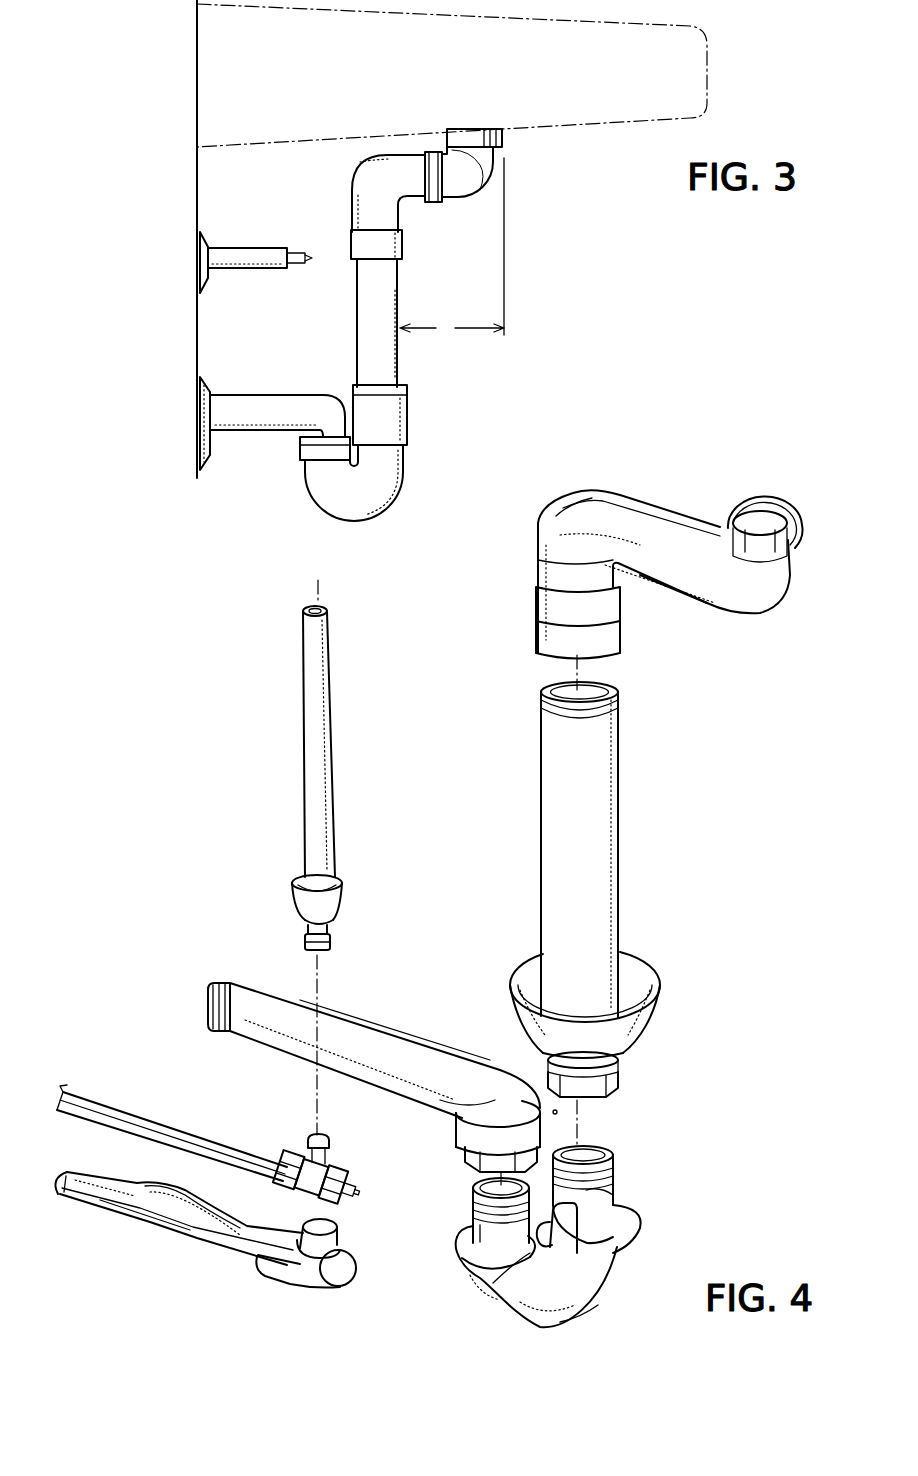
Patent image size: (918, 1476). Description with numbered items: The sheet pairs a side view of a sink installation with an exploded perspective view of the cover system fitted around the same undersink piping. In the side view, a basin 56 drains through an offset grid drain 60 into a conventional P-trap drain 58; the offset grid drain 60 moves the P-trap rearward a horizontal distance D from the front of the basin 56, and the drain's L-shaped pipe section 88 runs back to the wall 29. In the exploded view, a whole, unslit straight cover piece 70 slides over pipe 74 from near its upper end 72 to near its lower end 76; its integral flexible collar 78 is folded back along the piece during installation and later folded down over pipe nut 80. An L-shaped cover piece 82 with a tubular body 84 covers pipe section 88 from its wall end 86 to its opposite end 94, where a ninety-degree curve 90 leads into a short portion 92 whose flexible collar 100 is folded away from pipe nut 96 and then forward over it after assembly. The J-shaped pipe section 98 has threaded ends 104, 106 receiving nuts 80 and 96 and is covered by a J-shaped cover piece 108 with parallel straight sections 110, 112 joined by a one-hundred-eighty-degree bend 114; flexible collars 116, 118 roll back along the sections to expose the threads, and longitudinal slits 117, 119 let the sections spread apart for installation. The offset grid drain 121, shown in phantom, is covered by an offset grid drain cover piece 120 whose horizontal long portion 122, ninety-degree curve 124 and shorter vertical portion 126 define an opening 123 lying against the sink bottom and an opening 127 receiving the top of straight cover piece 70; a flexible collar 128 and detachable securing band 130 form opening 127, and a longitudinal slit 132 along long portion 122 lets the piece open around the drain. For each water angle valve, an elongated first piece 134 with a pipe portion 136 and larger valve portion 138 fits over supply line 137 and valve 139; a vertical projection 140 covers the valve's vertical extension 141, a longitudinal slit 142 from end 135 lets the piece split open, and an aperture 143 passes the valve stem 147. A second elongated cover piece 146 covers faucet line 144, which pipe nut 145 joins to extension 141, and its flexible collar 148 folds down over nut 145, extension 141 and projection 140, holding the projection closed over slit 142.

In FIG. 3, the wall 29 is at (207, 184).
In FIG. 3, the basin 56 is at (433, 90).
In FIG. 3, the P-trap drain 58 is at (437, 274).
In FIG. 3, the offset grid drain 60 is at (500, 182).
In FIG. 3, the straight cover piece 70 is at (366, 326).
In FIG. 4, the straight cover piece 70 is at (549, 854).
In FIG. 4, the upper end of pipe 72 is at (618, 690).
In FIG. 4, the straight pipe section 74 is at (541, 692).
In FIG. 4, the lower end of pipe 76 is at (621, 1089).
In FIG. 3, the flexible collar 78 is at (409, 410).
In FIG. 4, the flexible collar 78 is at (661, 985).
In FIG. 4, the pipe nut 80 is at (620, 1068).
In FIG. 3, the L-shaped cover piece 82 is at (283, 392).
In FIG. 4, the L-shaped cover piece 82 is at (374, 1091).
In FIG. 3, the elongated cylindrical tubular body 84 is at (243, 434).
In FIG. 4, the elongated cylindrical tubular body 84 is at (356, 1036).
In FIG. 4, the wall end 86 is at (196, 1003).
In FIG. 4, the L-shaped pipe section 88 is at (207, 1035).
In FIG. 4, the curve section 90 is at (498, 1088).
In FIG. 4, the short portion 92 is at (459, 1119).
In FIG. 4, the end of L-shaped pipe section 94 is at (470, 1163).
In FIG. 4, the pipe nut 96 is at (478, 1181).
In FIG. 4, the inlet 98 is at (629, 1179).
In FIG. 3, the flexible collar 100 is at (302, 450).
In FIG. 4, the flexible collar 100 is at (560, 1112).
In FIG. 4, the threaded end 104 is at (620, 1160).
In FIG. 4, the threaded end 106 is at (472, 1203).
In FIG. 3, the J-shaped cover piece 108 is at (340, 493).
In FIG. 4, the J-shaped cover piece 108 is at (525, 1300).
In FIG. 4, the straight section 110 is at (634, 1210).
In FIG. 4, the straight section 112 is at (470, 1222).
In FIG. 4, the bend 114 is at (590, 1318).
In FIG. 4, the flexible collar 116 is at (628, 1240).
In FIG. 4, the longitudinal slit 117 is at (560, 1248).
In FIG. 4, the flexible collar 118 is at (475, 1256).
In FIG. 4, the longitudinal slit 119 is at (500, 1282).
In FIG. 3, the offset grid drain cover piece 120 is at (355, 190).
In FIG. 4, the offset grid drain cover piece 120 is at (721, 608).
In FIG. 4, the offset grid drain 121 is at (786, 495).
In FIG. 4, the horizontal long portion 122 is at (652, 495).
In FIG. 4, the opening 123 is at (791, 551).
In FIG. 4, the curve 124 is at (552, 530).
In FIG. 4, the shorter vertical portion 126 is at (538, 557).
In FIG. 4, the opening 127 is at (545, 652).
In FIG. 3, the flexible collar 128 is at (357, 237).
In FIG. 4, the flexible collar 128 is at (538, 590).
In FIG. 4, the detachable securing band 130 is at (547, 626).
In FIG. 4, the longitudinal slit 132 is at (624, 492).
In FIG. 3, the elongated first piece 134 is at (243, 270).
In FIG. 4, the elongated first piece 134 is at (185, 1240).
In FIG. 4, the end of cover piece 135 is at (48, 1178).
In FIG. 4, the elongated pipe portion 136 is at (140, 1222).
In FIG. 3, the supply line 137 is at (298, 263).
In FIG. 4, the supply line 137 is at (138, 1112).
In FIG. 4, the valve portion 138 is at (298, 1285).
In FIG. 4, the valve 139 is at (301, 1158).
In FIG. 4, the vertical projection 140 is at (338, 1238).
In FIG. 4, the vertical extension 141 is at (315, 1134).
In FIG. 4, the longitudinal slit 142 is at (165, 1188).
In FIG. 4, the aperture 143 is at (345, 1282).
In FIG. 4, the faucet line 144 is at (330, 928).
In FIG. 4, the pipe nut 145 is at (335, 946).
In FIG. 4, the second elongated cover piece 146 is at (336, 753).
In FIG. 4, the stem 147 is at (355, 1188).
In FIG. 4, the flexible collar 148 is at (292, 905).